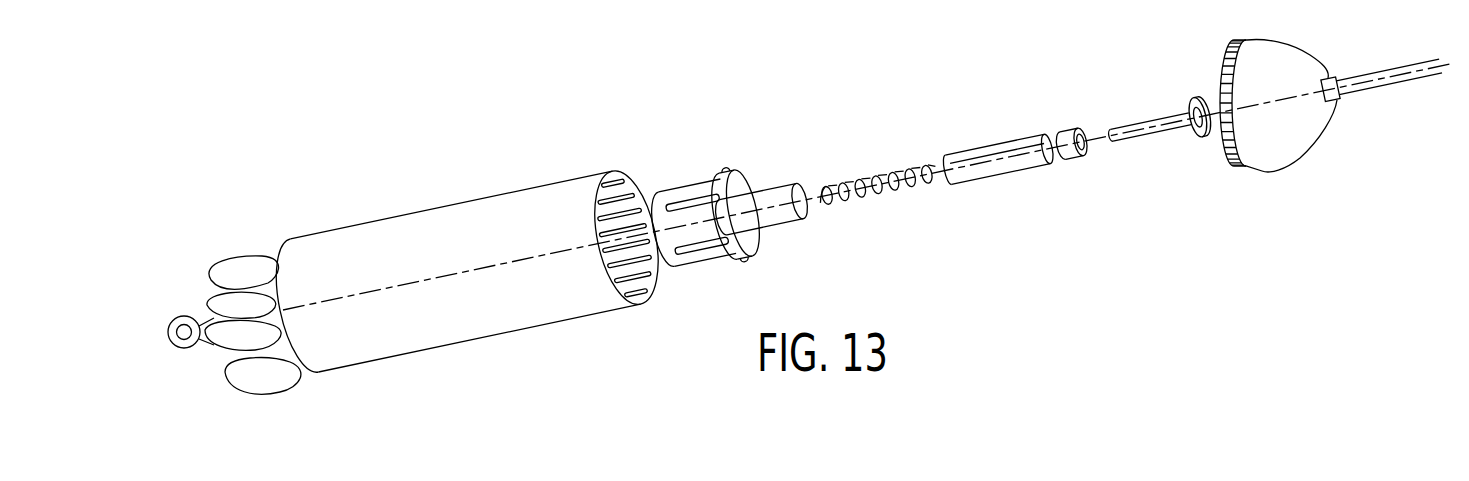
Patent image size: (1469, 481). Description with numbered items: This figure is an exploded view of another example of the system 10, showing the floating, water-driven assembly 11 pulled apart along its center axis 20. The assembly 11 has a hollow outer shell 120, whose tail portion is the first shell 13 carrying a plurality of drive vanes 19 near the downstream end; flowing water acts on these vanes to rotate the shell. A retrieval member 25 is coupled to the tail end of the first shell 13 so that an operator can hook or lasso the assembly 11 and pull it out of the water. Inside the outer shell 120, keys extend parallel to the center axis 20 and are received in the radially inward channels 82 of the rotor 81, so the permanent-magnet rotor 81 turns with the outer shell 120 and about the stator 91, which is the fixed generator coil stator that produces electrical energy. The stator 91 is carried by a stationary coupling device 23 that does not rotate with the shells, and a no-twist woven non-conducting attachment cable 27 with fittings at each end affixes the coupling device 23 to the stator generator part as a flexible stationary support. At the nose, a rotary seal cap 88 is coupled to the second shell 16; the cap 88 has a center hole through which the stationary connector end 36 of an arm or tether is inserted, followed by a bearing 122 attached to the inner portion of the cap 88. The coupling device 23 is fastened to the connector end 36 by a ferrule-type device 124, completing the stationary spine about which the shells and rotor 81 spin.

The system 10 is at (566, 136).
The assembly 11 is at (603, 364).
The first shell 13 is at (478, 213).
The second shell 16 is at (1313, 132).
The drive vanes 19 is at (283, 0).
The center axis 20 is at (447, 276).
The coupling device 23 is at (990, 147).
The retrieval member 25 is at (183, 350).
The attachment cable 27 is at (885, 198).
The connector end 36 is at (1380, 70).
The rotor 81 is at (675, 187).
The channels 82 is at (696, 209).
The rotary seal cap 88 is at (1330, 75).
The stator 91 is at (750, 237).
The outer shell 120 is at (338, 230).
The bearing 122 is at (1202, 140).
The ferrule-type device 124 is at (1072, 160).